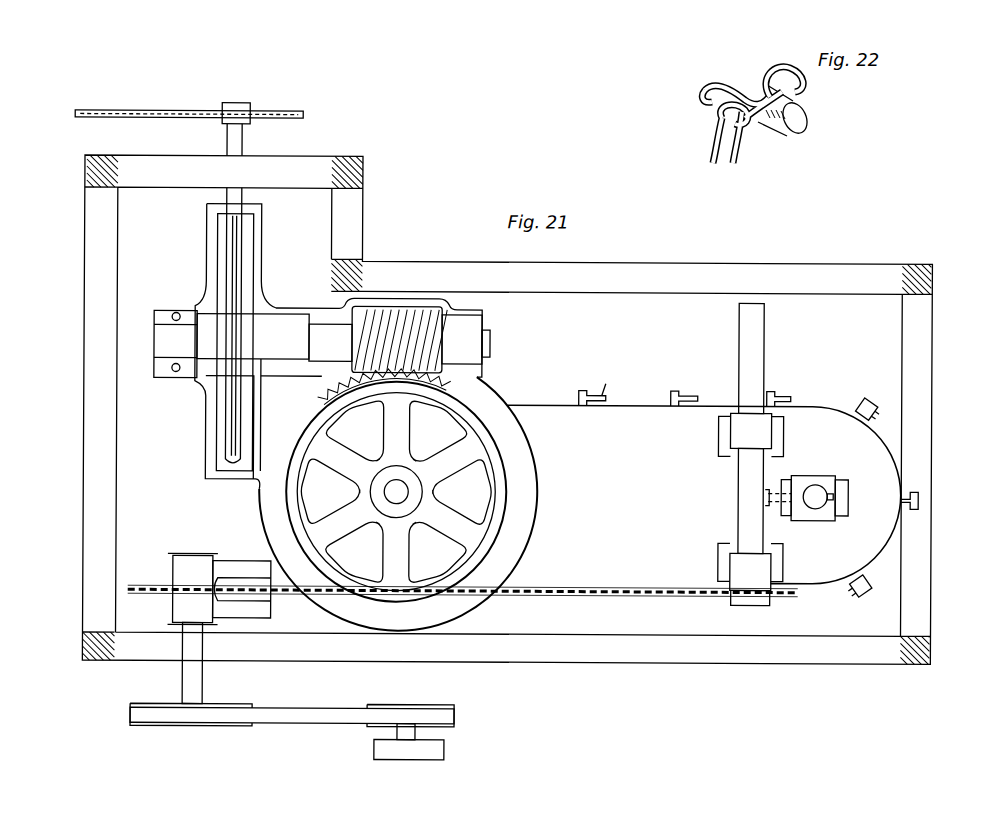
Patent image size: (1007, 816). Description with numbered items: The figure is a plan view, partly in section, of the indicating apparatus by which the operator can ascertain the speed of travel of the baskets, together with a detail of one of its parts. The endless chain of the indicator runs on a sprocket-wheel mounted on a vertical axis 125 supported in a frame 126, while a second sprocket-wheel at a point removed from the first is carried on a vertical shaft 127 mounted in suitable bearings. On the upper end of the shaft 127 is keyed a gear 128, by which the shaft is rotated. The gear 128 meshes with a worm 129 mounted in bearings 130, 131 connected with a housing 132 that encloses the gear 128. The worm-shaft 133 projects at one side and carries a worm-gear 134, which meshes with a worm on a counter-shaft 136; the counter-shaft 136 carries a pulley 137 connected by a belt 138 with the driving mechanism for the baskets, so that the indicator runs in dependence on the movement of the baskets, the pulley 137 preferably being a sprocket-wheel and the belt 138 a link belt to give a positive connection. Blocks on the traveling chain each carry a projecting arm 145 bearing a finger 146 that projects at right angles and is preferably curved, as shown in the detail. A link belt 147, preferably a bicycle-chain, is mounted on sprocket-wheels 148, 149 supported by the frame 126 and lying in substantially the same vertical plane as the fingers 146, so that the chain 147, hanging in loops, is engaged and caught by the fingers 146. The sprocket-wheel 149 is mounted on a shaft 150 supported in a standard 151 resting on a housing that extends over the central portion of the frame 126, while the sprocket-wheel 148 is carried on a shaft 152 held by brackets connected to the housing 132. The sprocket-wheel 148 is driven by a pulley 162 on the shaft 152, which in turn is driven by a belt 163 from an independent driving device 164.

In FIG. 21, the vertical axis 125 is at (816, 492).
In FIG. 21, the frame 126 is at (97, 340).
In FIG. 21, the vertical shaft 127 is at (400, 490).
In FIG. 21, the gear 128 is at (467, 440).
In FIG. 21, the worm 129 is at (392, 322).
In FIG. 21, the bearing 130 is at (488, 323).
In FIG. 21, the bearing 131 is at (325, 327).
In FIG. 21, the housing 132 is at (487, 395).
In FIG. 21, the worm-shaft 133 is at (287, 337).
In FIG. 21, the worm-gear 134 is at (232, 287).
In FIG. 21, the counter-shaft 136 is at (240, 145).
In FIG. 21, the pulley 137 is at (287, 103).
In FIG. 21, the belt 138 is at (189, 103).
In FIG. 21, the projecting arm 145 is at (865, 393).
In FIG. 21, the finger 146 is at (692, 393).
In FIG. 22, the finger 146 is at (716, 108).
In FIG. 21, the link belt 147 is at (583, 590).
In FIG. 22, the link belt 147 is at (750, 136).
In FIG. 21, the sprocket-wheel 148 is at (140, 585).
In FIG. 21, the sprocket-wheel 149 is at (700, 590).
In FIG. 21, the shaft 150 is at (748, 363).
In FIG. 21, the standard 151 is at (725, 542).
In FIG. 21, the shaft 152 is at (200, 682).
In FIG. 21, the pulley 162 is at (237, 722).
In FIG. 21, the belt 163 is at (324, 715).
In FIG. 21, the independent driving device 164 is at (425, 748).